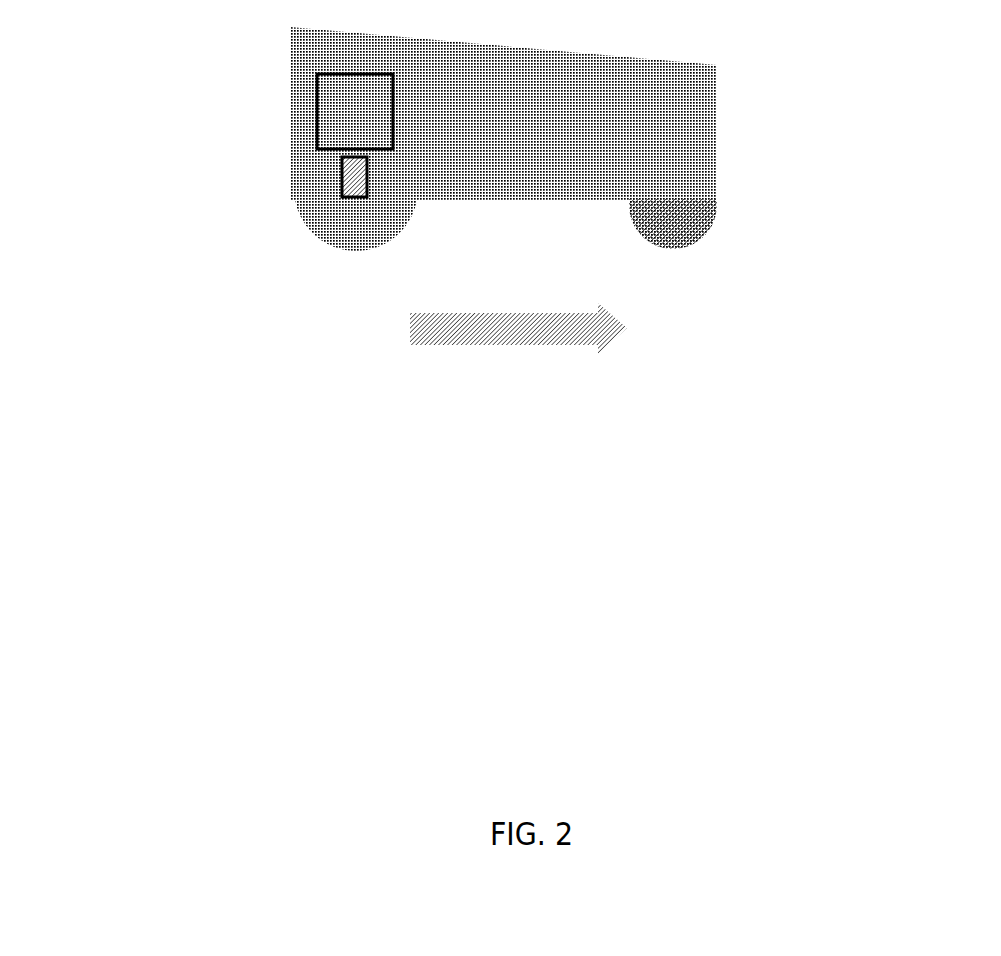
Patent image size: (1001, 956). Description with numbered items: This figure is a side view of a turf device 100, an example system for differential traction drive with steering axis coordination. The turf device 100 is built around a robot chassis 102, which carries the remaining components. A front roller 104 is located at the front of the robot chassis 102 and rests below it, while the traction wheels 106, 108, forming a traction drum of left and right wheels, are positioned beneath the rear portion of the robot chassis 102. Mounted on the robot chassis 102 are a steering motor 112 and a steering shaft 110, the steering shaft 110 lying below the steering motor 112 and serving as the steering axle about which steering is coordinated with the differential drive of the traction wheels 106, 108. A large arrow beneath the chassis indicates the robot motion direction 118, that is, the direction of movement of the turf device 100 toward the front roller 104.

The turf device 100 is at (511, 189).
The robot chassis 102 is at (720, 81).
The front roller 104 is at (709, 234).
The left traction wheel 106 is at (306, 229).
The right traction wheel 108 is at (297, 249).
The steering shaft 110 is at (209, 185).
The steering motor 112 is at (315, 112).
The robot motion direction 118 is at (428, 339).